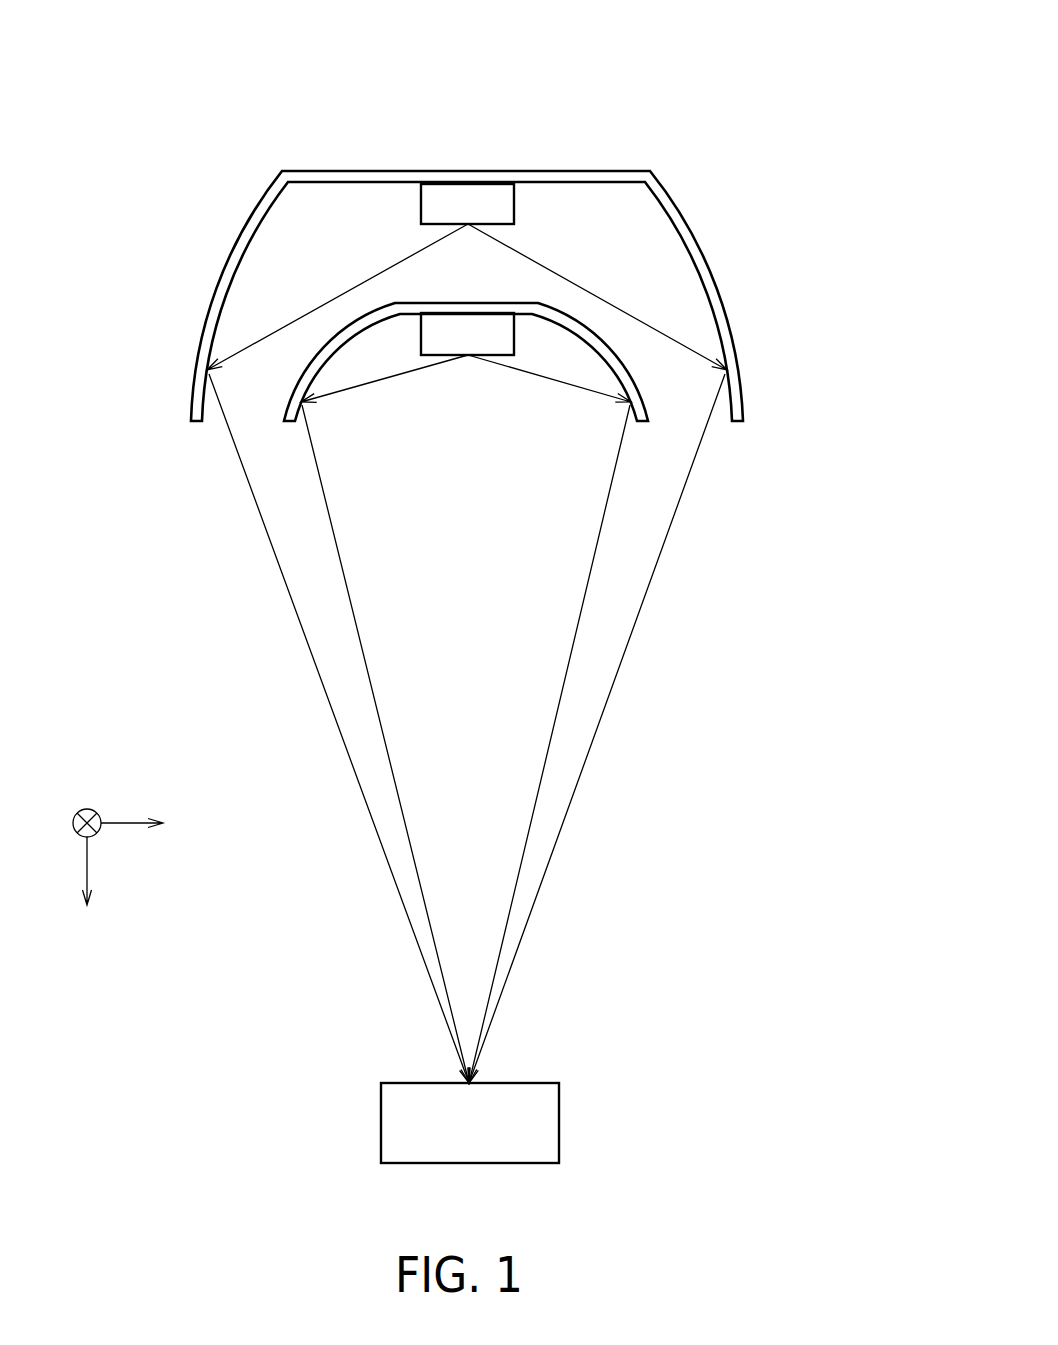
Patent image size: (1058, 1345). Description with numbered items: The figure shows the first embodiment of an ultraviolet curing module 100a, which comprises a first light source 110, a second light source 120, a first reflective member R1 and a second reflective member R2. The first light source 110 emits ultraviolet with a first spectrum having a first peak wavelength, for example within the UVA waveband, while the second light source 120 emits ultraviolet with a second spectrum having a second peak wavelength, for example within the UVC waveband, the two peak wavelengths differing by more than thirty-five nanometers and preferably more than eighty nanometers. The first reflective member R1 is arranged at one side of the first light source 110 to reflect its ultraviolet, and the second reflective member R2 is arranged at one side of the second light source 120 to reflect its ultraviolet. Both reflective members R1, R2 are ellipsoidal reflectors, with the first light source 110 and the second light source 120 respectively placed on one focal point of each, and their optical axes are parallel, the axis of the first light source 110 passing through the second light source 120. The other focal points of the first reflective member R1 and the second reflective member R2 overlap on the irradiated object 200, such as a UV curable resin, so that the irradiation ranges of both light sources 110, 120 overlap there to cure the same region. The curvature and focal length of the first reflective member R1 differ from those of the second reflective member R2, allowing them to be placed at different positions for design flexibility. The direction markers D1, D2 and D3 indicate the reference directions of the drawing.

The ultraviolet curing module 100a is at (723, 90).
The first light source 110 is at (448, 217).
The second light source 120 is at (448, 348).
The first reflective member R1 is at (687, 226).
The second reflective member R2 is at (630, 375).
The irradiated object 200 is at (448, 1140).
The first direction D1 is at (83, 807).
The second direction D2 is at (150, 824).
The third direction D3 is at (85, 890).